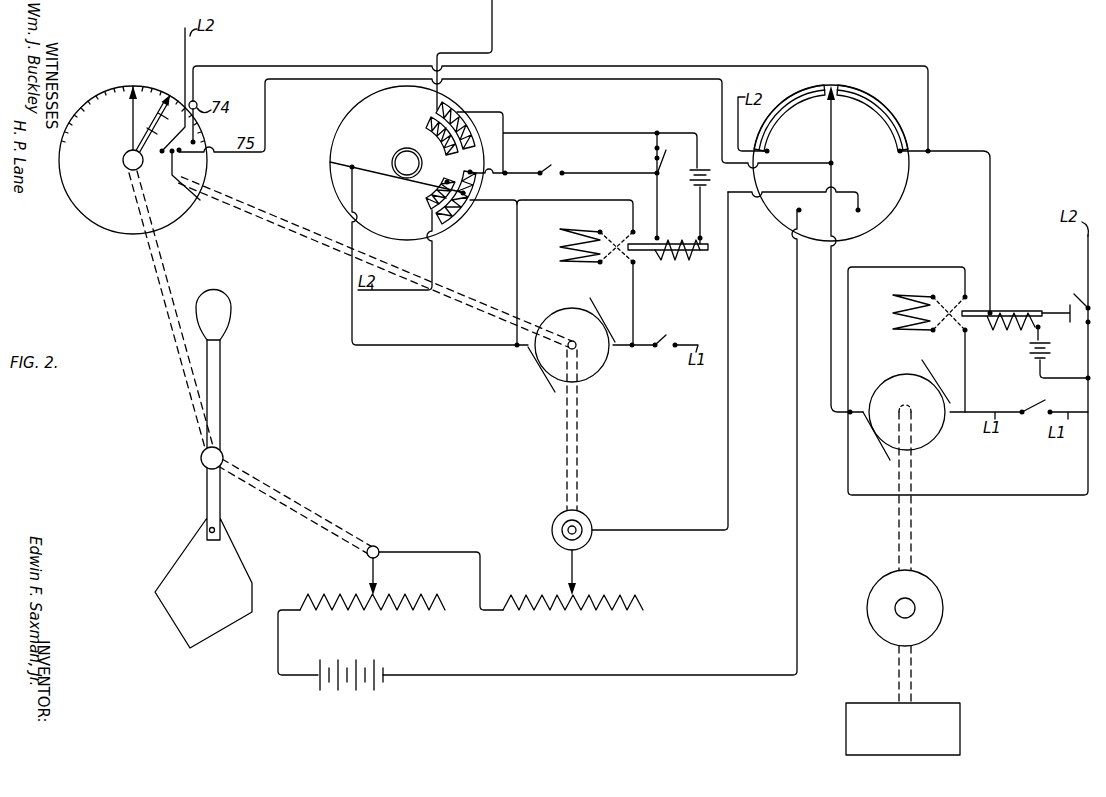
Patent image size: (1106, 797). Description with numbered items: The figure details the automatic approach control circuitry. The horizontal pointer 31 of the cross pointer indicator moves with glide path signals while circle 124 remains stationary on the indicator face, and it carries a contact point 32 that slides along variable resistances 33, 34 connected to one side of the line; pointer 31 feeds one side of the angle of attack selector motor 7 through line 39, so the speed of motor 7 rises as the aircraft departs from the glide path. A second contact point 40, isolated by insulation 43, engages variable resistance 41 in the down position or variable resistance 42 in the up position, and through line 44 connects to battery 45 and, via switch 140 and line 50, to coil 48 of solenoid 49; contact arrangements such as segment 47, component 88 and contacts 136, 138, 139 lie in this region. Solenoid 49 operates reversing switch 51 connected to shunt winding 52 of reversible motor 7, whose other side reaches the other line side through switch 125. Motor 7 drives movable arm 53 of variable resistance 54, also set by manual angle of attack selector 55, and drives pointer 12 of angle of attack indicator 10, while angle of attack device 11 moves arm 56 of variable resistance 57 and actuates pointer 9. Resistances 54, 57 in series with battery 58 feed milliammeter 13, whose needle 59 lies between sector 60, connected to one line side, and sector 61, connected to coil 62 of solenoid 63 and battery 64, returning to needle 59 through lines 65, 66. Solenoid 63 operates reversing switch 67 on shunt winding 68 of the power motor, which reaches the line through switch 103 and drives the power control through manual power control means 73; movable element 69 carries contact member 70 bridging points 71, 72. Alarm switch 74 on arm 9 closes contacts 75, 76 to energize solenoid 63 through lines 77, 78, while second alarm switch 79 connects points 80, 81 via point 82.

The angle of attack selector motor 7 is at (593, 362).
The pointer 9 is at (167, 98).
The angle of attack indicator 10 is at (102, 227).
The angle of attack device 11 is at (222, 437).
The pointer 12 is at (130, 85).
The milliammeter 13 is at (907, 176).
The horizontal pointer 31 is at (346, 160).
The contact point 32 is at (445, 180).
The variable resistance 33 is at (440, 190).
The variable resistance 34 is at (432, 124).
The line 39 is at (441, 345).
The second contact point 40 is at (466, 203).
The variable resistance 41 is at (330, 167).
The variable resistance 42 is at (467, 117).
The insulation 43 is at (478, 194).
The line 44 is at (563, 133).
The battery 45 is at (666, 172).
The segment 47 is at (449, 218).
The coil 48 is at (708, 243).
The solenoid 49 is at (670, 258).
The line 50 is at (581, 180).
The reversing switch 51 is at (604, 231).
The shunt winding 52 is at (557, 263).
The movable arm 53 is at (577, 560).
The variable resistance 54 is at (578, 610).
The manual angle of attack selector 55 is at (586, 516).
The movable arm 56 is at (370, 577).
The variable resistance 57 is at (400, 607).
The battery 58 is at (351, 690).
The needle 59 is at (834, 140).
The sector 60 is at (801, 100).
The sector 61 is at (879, 105).
The coil 62 is at (996, 310).
The solenoid 63 is at (1003, 330).
The battery 64 is at (1031, 360).
The line 65 is at (987, 495).
The line 66 is at (830, 338).
The reversing switch 67 is at (943, 296).
The shunt winding 68 is at (890, 320).
The movable element 69 is at (1033, 310).
The contact member 70 is at (1068, 309).
The point 71 is at (1076, 293).
The point 72 is at (1082, 324).
The manual power control means 73 is at (938, 603).
The alarm switch 74 is at (925, 432).
The contact 75 is at (961, 722).
The contact 76 is at (196, 144).
The line 77 is at (620, 66).
The line 78 is at (266, 131).
The second alarm switch 79 is at (133, 133).
The point 80 is at (162, 156).
The point 81 is at (175, 156).
The point 82 is at (200, 205).
The battery 88 is at (699, 209).
The switch 103 is at (1032, 406).
The circle 124 is at (404, 147).
The switch 125 is at (662, 337).
The contact 136 is at (655, 172).
The contact 138 is at (655, 158).
The contact 139 is at (655, 147).
The switch 140 is at (549, 167).